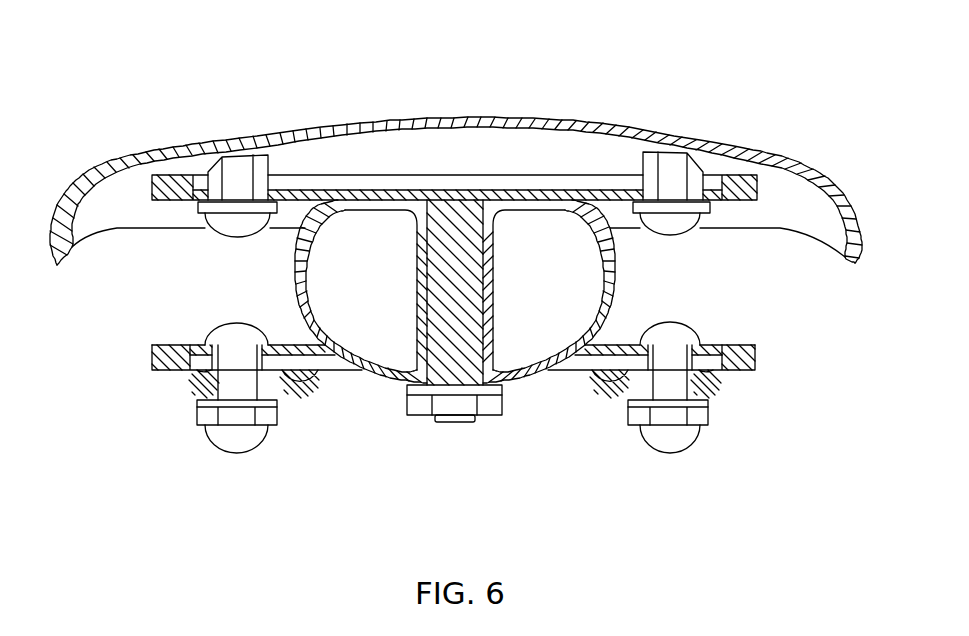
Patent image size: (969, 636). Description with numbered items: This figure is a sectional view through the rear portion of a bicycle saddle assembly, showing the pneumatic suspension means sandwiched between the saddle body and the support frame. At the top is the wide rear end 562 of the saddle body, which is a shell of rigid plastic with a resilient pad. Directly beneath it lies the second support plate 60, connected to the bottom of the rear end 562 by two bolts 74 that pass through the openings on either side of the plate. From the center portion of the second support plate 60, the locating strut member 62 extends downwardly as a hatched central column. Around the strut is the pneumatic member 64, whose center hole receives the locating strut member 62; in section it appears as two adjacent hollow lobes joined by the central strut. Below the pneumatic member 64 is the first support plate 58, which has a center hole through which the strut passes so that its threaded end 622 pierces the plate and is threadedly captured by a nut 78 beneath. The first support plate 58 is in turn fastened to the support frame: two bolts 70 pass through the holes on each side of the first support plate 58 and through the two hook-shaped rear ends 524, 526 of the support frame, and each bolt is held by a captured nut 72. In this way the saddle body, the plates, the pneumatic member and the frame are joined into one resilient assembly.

The wide rear end 562 is at (507, 120).
The second support plate 60 is at (598, 183).
The bolt 74 is at (690, 233).
The pneumatic member 64 is at (617, 282).
The locating strut member 62 is at (458, 308).
The first support plate 58 is at (748, 372).
The bolt 70 is at (700, 332).
The captured nut 72 is at (220, 450).
The hook-shaped rear end 526 is at (305, 398).
The hook-shaped rear end 524 is at (712, 382).
The nut 78 is at (409, 416).
The threaded end 622 is at (467, 422).